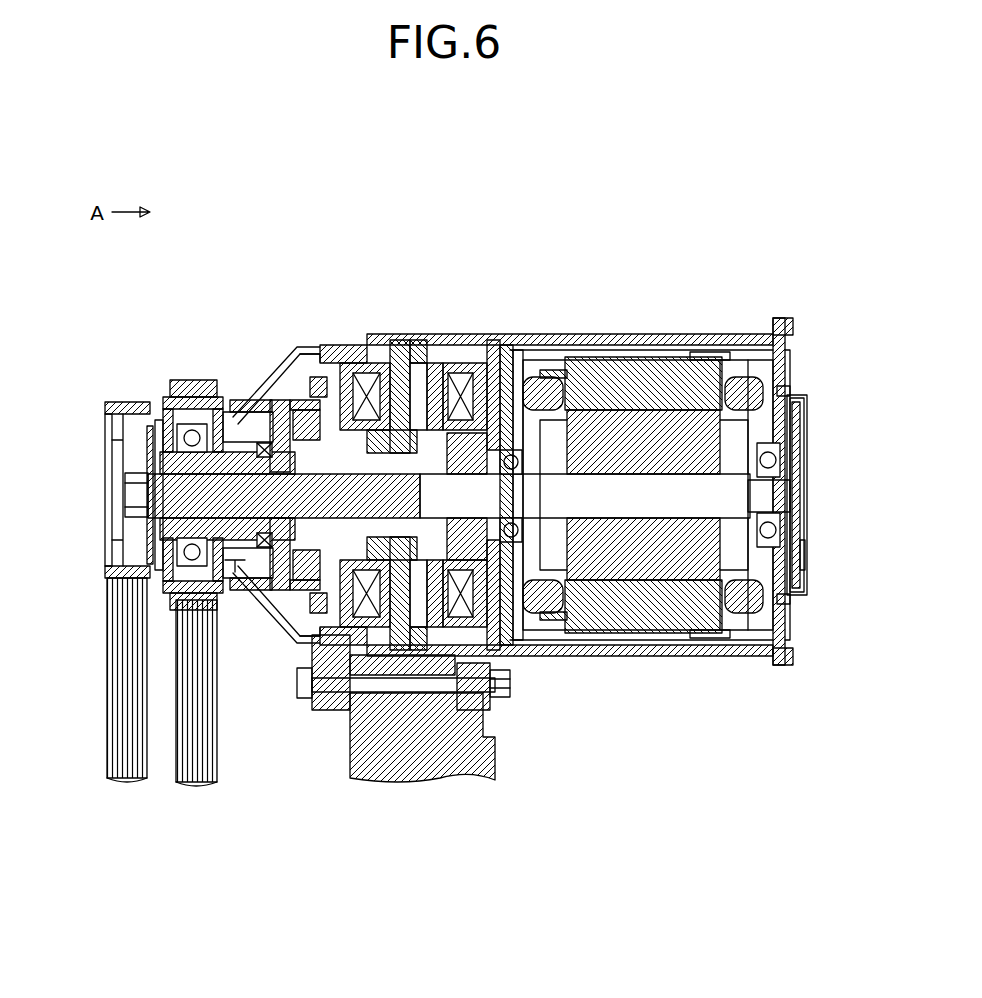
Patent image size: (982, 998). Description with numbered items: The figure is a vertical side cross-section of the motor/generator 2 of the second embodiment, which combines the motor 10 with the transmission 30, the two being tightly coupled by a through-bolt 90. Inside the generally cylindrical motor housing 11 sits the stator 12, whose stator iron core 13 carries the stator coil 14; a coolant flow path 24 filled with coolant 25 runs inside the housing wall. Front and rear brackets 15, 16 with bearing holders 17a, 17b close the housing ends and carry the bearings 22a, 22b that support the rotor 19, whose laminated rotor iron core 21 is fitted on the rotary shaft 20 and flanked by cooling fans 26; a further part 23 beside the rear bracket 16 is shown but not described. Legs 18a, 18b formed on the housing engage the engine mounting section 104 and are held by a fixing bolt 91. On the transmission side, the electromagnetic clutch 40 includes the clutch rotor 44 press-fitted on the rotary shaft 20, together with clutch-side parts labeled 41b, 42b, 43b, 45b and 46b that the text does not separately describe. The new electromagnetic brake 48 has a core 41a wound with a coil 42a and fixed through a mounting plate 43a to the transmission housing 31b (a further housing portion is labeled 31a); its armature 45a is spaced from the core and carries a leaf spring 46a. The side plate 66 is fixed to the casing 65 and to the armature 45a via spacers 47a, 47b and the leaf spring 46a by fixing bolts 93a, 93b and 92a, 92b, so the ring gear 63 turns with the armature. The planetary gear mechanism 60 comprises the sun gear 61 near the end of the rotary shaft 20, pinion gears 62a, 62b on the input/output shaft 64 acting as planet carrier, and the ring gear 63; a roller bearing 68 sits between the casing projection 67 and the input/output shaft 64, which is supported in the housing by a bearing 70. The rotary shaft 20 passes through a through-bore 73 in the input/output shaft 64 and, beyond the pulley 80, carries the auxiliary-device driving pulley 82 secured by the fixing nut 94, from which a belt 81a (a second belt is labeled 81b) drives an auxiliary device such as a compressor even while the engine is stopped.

The motor/generator 2 is at (609, 337).
The motor 10 is at (692, 340).
The motor housing 11 is at (666, 340).
The stator 12 is at (766, 340).
The stator iron core 13 is at (636, 340).
The stator coil 14 is at (605, 343).
The front bracket 15 is at (550, 343).
The rear bracket 16 is at (790, 362).
The bearing holder 17a is at (580, 656).
The bearing holder 17b is at (800, 440).
The leg 18a is at (345, 700).
The leg 18b is at (482, 772).
The rotor 19 is at (800, 600).
The rotary shaft 20 is at (800, 548).
The rotor iron core 21 is at (700, 656).
The bearing 22a is at (620, 656).
The bearing 22b is at (798, 470).
The rear cover 23 is at (812, 498).
The coolant flow path 24 is at (727, 340).
The coolant 25 is at (740, 340).
The cooling fans 26 is at (797, 397).
The transmission 30 is at (318, 345).
The front boss 31a is at (212, 400).
The transmission housing 31b is at (420, 347).
The electromagnetic clutch 40 is at (500, 345).
The core 41a is at (381, 345).
The second bearing 41b is at (500, 662).
The coil 42a is at (362, 345).
The second rotor hub 42b is at (505, 660).
The mounting plate 43a is at (438, 345).
The second side plate 43b is at (530, 650).
The clutch rotor 44 is at (503, 698).
The armature 45a is at (353, 345).
The second yoke 45b is at (478, 345).
The leaf spring 46a is at (327, 345).
The second coil 46b is at (451, 345).
The spacer 47a is at (308, 345).
The spacer 47b is at (316, 654).
The electromagnetic brake 48 is at (408, 347).
The planetary gear mechanism 60 is at (225, 330).
The sun gear 61 is at (232, 574).
The pinion gear 62a is at (215, 425).
The pinion gear 62b is at (210, 565).
The ring gear 63 is at (286, 602).
The input/output shaft 64 is at (252, 592).
The casing 65 is at (252, 400).
The side plate 66 is at (262, 412).
The projection 67 is at (172, 397).
The roller bearing 68 is at (158, 420).
The bearing 70 is at (150, 438).
The through-bore 73 is at (172, 593).
The pulley 80 is at (105, 418).
The belt 81a is at (123, 782).
The second belt 81b is at (186, 784).
The auxiliary-device driving pulley 82 is at (105, 486).
The through-bolt 90 is at (711, 340).
The fixing bolt 91 is at (294, 690).
The fixing bolt 92a is at (290, 347).
The fixing bolt 92b is at (296, 644).
The fixing bolt 93a is at (347, 345).
The fixing bolt 93b is at (357, 654).
The fixing nut 94 is at (128, 505).
The mounting section 104 is at (428, 784).